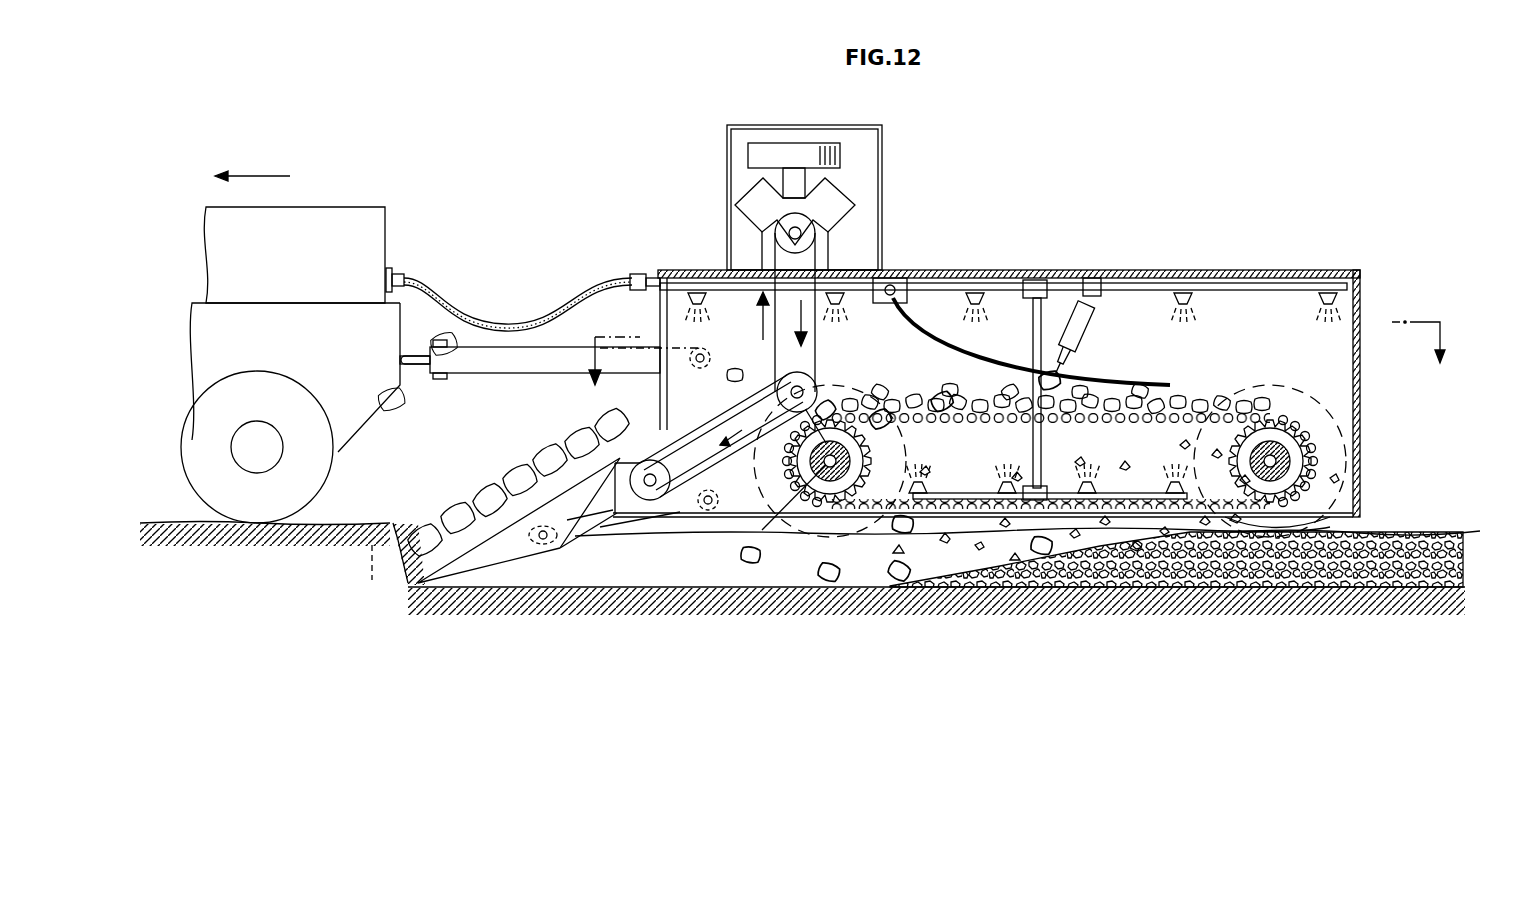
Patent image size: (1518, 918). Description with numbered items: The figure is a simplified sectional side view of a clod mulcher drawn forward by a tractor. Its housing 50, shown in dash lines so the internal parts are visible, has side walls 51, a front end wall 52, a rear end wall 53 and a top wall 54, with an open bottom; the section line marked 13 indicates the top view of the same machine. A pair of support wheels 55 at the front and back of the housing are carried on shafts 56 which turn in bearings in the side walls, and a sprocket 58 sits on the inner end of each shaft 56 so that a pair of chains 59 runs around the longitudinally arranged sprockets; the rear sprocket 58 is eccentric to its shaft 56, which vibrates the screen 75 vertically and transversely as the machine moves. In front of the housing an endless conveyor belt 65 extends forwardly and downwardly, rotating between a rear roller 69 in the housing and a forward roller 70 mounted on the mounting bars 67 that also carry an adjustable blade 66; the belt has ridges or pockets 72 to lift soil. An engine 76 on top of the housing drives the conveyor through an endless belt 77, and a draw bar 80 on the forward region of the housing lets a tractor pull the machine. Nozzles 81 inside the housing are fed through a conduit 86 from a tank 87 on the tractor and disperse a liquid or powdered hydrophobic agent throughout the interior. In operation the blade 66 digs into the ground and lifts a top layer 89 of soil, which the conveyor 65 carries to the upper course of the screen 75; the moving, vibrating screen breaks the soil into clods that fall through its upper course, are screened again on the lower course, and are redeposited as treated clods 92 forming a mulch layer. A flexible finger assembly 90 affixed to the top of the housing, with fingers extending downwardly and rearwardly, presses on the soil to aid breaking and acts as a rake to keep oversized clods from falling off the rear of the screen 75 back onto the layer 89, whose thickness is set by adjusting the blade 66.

The section line 13- 13 is at (1016, 365).
The housing 50 is at (1249, 323).
The side walls 51 is at (1130, 359).
The front end wall 52 is at (660, 318).
The rear end wall 53 is at (1362, 378).
The top wall 54 is at (1057, 262).
The support wheels 55 is at (1310, 513).
The shafts 56 is at (1268, 476).
The sprocket 58 is at (1295, 463).
The chains 59 is at (1183, 412).
The endless conveyor belt 65 is at (725, 462).
The adjustable blade 66 is at (523, 547).
The mounting bars 67 is at (600, 527).
The rear roller 69 is at (832, 372).
The forward roller 70 is at (672, 470).
The ridges or pockets 72 is at (680, 490).
The screen 75 is at (1140, 416).
The engine 76 is at (748, 198).
The endless belt 77 is at (817, 262).
The draw bar 80 is at (535, 367).
The nozzles 81 is at (713, 292).
The conduit 86 is at (486, 316).
The tank 87 is at (312, 206).
The top layer of soil 89 is at (383, 536).
The flexible finger assembly 90 is at (900, 298).
The treated clods 92 is at (1340, 578).